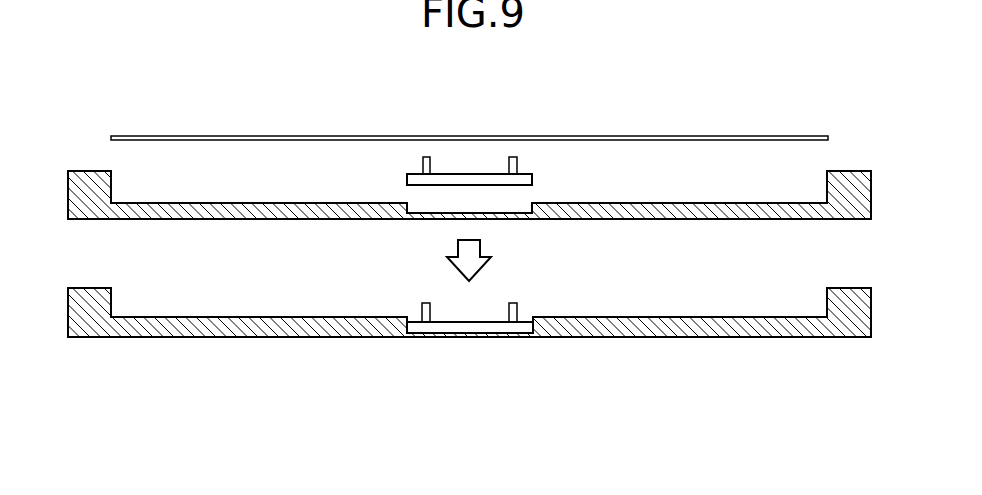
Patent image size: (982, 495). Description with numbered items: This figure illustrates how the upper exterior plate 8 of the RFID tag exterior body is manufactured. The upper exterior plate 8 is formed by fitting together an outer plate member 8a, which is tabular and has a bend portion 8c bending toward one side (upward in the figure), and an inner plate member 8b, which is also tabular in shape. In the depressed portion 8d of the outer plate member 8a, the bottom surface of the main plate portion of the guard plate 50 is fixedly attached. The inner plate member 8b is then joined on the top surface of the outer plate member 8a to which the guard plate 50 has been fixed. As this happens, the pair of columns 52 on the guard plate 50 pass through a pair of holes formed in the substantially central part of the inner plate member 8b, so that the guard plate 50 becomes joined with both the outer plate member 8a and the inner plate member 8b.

The upper exterior plate 8 is at (91, 337).
The outer plate member 8a is at (122, 217).
The inner plate member 8b is at (174, 135).
The bend portion 8c is at (853, 175).
The depressed portion 8d is at (528, 207).
The guard plate 50 is at (528, 174).
The columns 52 is at (428, 155).